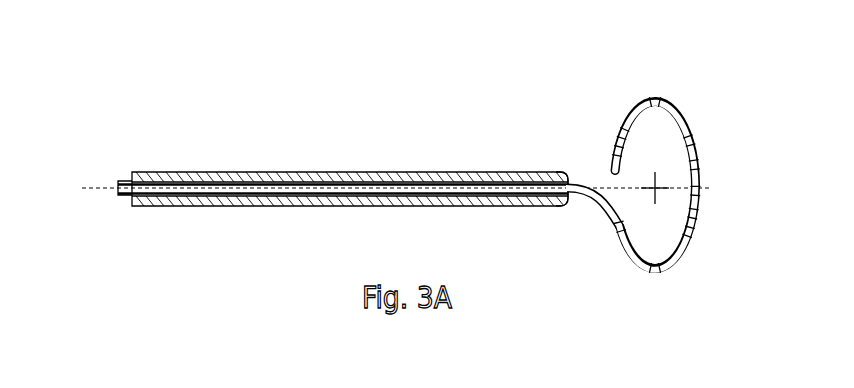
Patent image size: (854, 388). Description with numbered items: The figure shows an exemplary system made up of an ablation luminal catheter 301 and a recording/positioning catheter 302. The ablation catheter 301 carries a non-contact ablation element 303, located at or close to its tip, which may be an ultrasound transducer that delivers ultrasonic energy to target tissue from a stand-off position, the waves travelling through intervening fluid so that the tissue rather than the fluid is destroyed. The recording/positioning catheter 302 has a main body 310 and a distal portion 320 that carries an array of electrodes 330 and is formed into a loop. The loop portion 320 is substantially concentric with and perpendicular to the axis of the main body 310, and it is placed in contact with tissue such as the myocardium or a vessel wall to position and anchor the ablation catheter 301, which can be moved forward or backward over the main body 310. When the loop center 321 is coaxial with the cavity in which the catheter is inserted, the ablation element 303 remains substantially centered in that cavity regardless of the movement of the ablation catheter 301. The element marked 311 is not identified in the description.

The ablation luminal catheter 301 is at (312, 190).
The recording/positioning catheter 302 is at (588, 184).
The non-contact ablation element 303 is at (550, 206).
The main body 310 is at (318, 206).
The inner core wire 311 is at (101, 180).
The distal portion 320 is at (683, 144).
The loop center 321 is at (657, 186).
The electrodes 330 is at (697, 232).